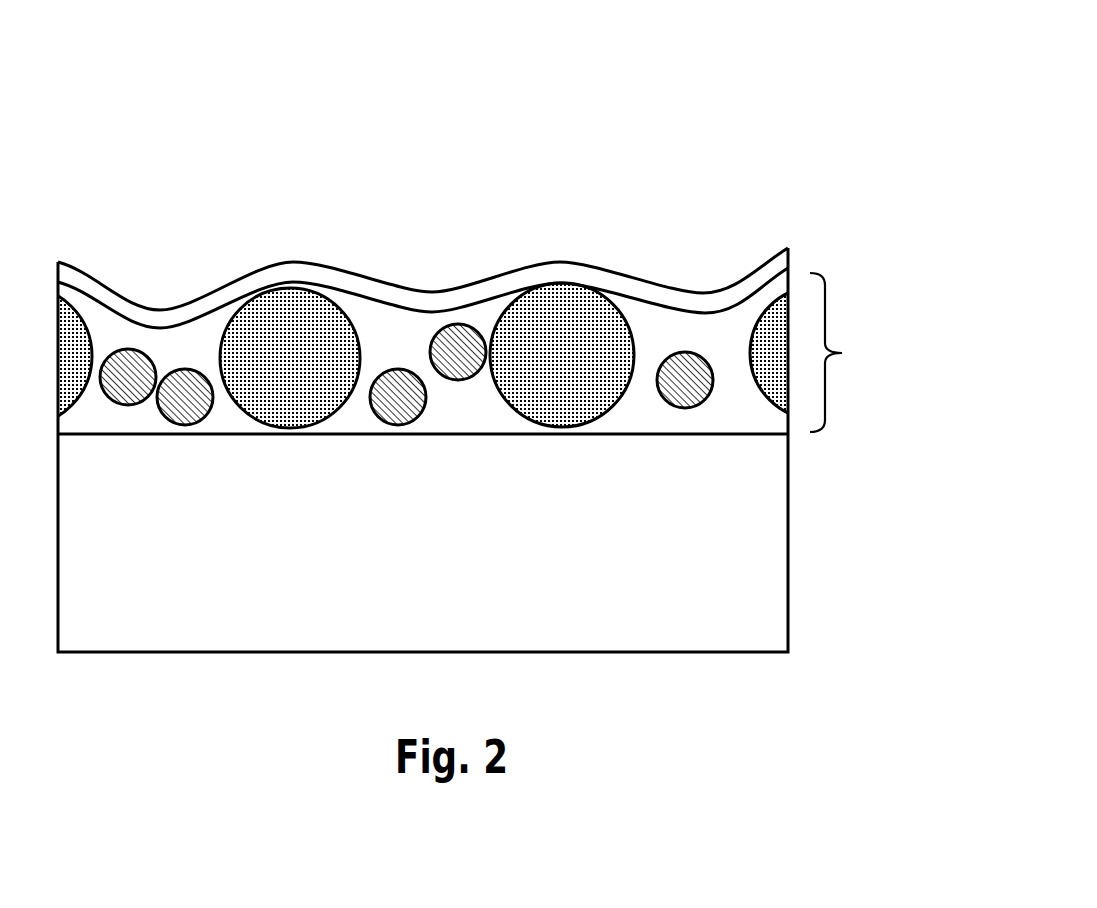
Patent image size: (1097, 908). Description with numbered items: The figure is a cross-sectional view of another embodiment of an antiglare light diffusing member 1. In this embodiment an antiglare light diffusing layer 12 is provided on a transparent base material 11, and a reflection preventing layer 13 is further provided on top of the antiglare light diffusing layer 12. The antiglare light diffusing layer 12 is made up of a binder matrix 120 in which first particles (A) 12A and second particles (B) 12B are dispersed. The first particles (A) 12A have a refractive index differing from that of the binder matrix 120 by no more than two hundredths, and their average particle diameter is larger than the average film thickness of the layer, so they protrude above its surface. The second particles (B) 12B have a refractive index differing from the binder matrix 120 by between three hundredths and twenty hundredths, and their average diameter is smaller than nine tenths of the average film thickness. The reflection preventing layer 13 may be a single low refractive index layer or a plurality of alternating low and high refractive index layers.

The antiglare light diffusing member 1 is at (737, 147).
The transparent base material 11 is at (735, 523).
The antiglare light diffusing layer 12 is at (454, 285).
The first particles (A) 12A is at (318, 355).
The second particles (B) 12B is at (457, 350).
The binder matrix 120 is at (660, 327).
The reflection preventing layer 13 is at (790, 260).